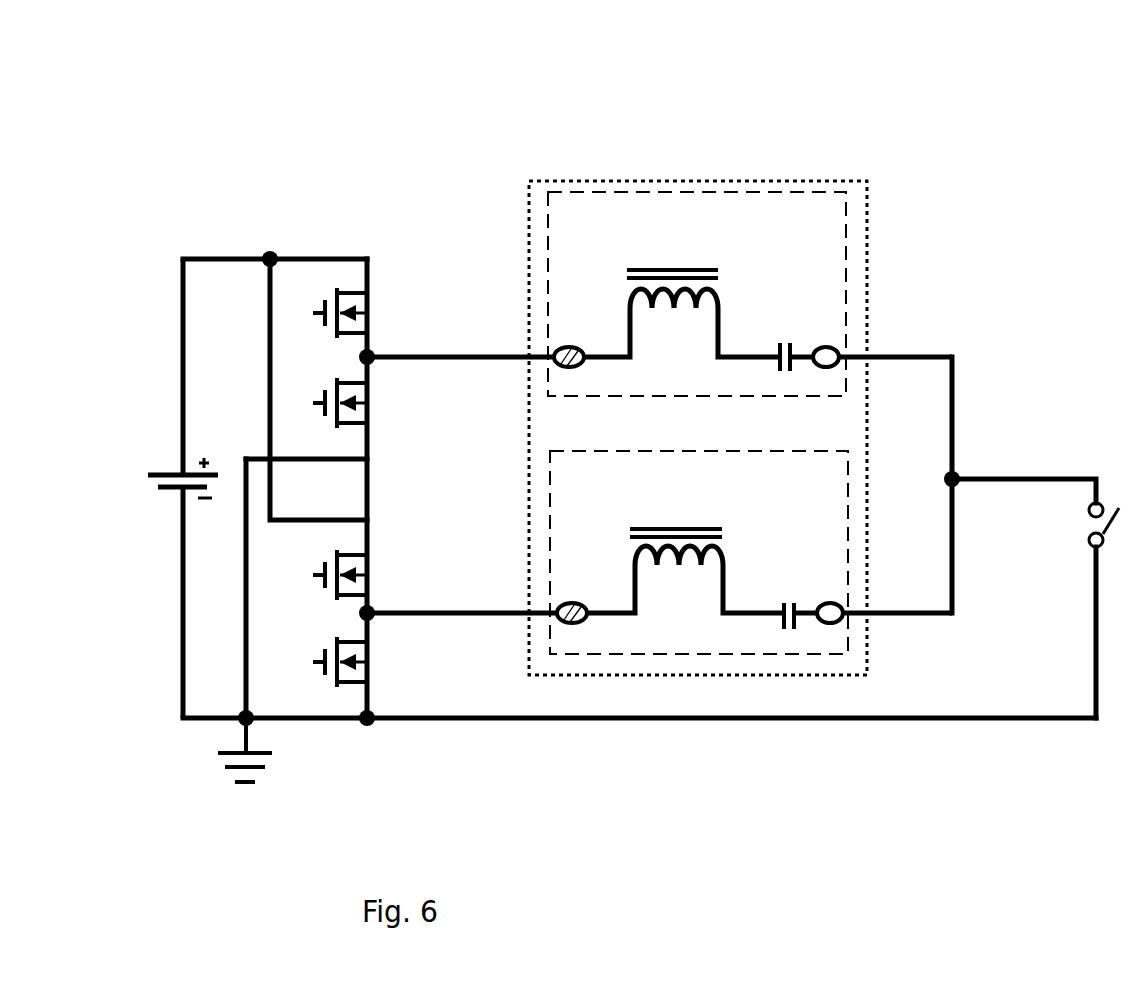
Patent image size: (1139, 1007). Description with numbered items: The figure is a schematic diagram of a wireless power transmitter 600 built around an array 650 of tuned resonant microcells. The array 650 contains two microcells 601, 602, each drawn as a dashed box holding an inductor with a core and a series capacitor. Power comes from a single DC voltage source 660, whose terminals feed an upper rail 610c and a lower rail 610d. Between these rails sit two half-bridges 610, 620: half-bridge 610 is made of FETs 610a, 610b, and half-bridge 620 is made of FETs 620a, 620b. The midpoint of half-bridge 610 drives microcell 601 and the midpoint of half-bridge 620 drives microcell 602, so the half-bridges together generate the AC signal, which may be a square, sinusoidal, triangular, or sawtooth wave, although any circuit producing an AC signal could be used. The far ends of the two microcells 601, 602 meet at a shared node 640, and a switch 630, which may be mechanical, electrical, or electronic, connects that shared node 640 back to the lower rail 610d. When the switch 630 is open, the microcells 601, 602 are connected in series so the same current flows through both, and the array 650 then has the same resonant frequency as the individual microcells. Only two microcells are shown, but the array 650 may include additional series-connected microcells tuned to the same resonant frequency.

The wireless power transmitter 600 is at (192, 68).
The half-bridge 610 is at (342, 250).
The FET 610a is at (373, 322).
The FET 610b is at (373, 397).
The upper rail 610c is at (183, 388).
The lower rail 610d is at (183, 573).
The half-bridge 620 is at (300, 720).
The FET 620a is at (373, 580).
The FET 620b is at (373, 655).
The microcell 601 is at (713, 193).
The microcell 602 is at (658, 652).
The array 650 is at (863, 183).
The shared node 640 is at (944, 479).
The switch 630 is at (1078, 538).
The DC voltage source 660 is at (148, 475).